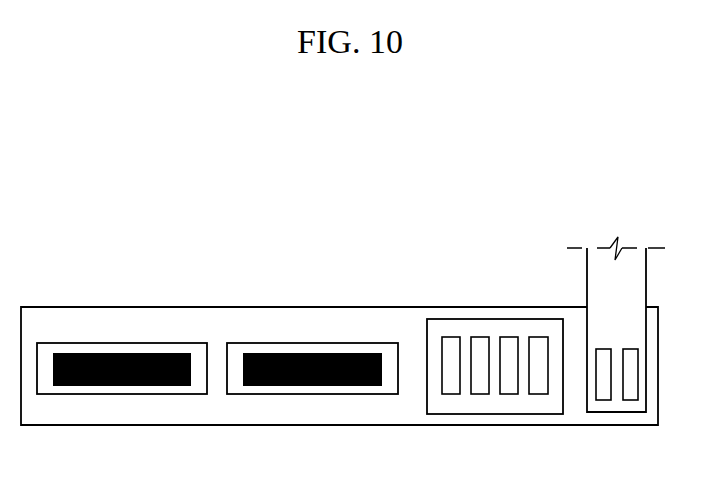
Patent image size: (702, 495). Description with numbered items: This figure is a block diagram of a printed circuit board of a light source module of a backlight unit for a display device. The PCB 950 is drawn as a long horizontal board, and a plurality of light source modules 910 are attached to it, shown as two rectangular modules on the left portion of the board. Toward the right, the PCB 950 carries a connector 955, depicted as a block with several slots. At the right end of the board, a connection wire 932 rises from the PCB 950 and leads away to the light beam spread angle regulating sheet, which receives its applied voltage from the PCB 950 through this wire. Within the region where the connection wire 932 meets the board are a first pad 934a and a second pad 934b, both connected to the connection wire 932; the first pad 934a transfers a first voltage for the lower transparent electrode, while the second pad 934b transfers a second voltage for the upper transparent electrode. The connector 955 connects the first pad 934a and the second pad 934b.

The light source module 910 is at (131, 390).
The PCB 950 is at (362, 418).
The connector 955 is at (489, 408).
The connection wire 932 is at (590, 270).
The first pad 934a is at (603, 397).
The second pad 934b is at (630, 397).